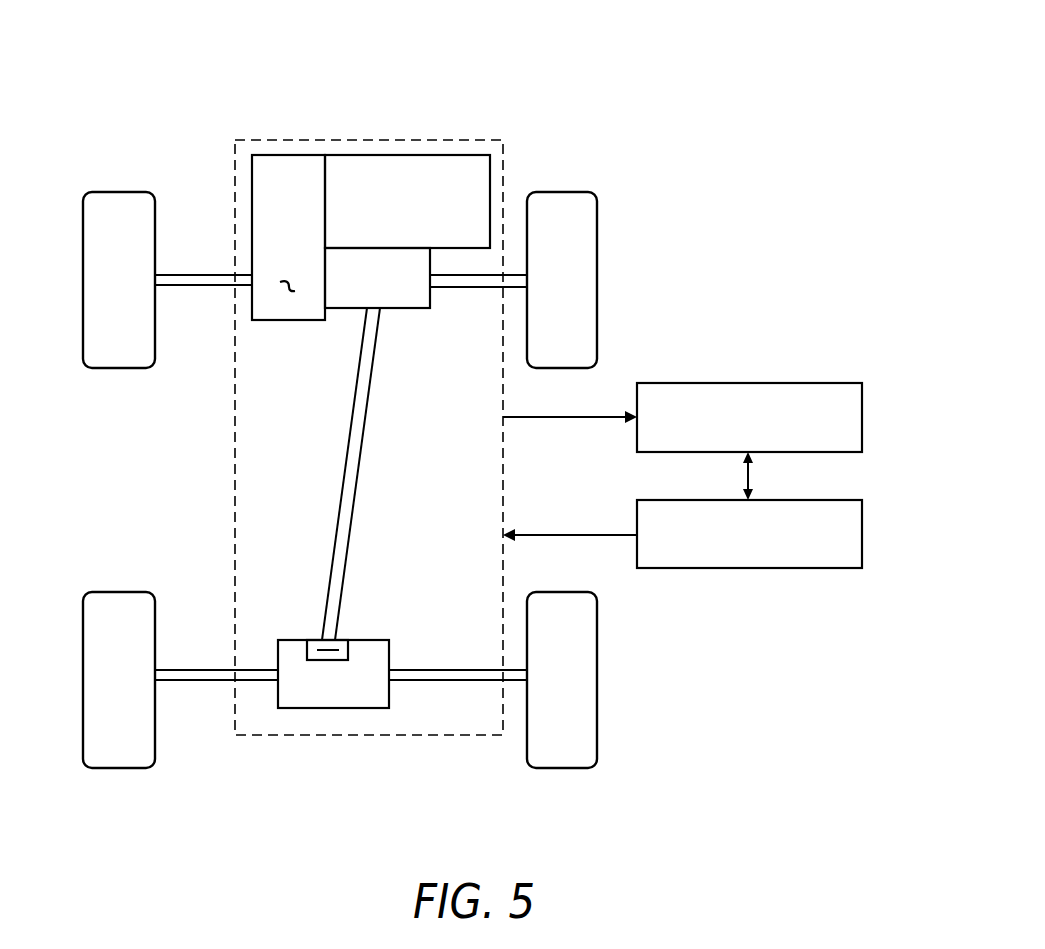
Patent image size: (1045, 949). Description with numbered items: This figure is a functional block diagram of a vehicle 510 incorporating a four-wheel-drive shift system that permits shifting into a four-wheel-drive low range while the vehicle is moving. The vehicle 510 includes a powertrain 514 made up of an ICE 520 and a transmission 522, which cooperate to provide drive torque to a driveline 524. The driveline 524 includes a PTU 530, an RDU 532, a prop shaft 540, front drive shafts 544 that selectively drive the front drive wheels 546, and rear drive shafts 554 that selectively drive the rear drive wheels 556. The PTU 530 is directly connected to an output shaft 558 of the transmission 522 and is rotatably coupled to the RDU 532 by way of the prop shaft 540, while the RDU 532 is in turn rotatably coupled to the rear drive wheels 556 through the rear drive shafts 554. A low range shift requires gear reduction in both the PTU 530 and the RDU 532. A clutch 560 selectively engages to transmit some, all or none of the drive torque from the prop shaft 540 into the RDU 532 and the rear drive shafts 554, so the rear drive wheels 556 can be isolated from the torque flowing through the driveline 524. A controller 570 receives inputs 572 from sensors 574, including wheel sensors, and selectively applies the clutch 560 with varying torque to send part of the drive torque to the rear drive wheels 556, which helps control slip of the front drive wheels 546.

The vehicle 510 is at (768, 103).
The powertrain 514 is at (503, 455).
The ICE 520 is at (430, 155).
The transmission 522 is at (280, 155).
The driveline 524 is at (348, 352).
The PTU 530 is at (408, 309).
The RDU 532 is at (318, 709).
The prop shaft 540 is at (365, 441).
The front drive shafts 544 is at (190, 275).
The front drive wheels 546 is at (125, 192).
The rear drive shafts 554 is at (200, 680).
The rear drive wheels 556 is at (122, 768).
The output shaft 558 is at (281, 283).
The clutch 560 is at (349, 652).
The controller 570 is at (772, 568).
The inputs 572 is at (755, 474).
The sensors 574 is at (777, 383).